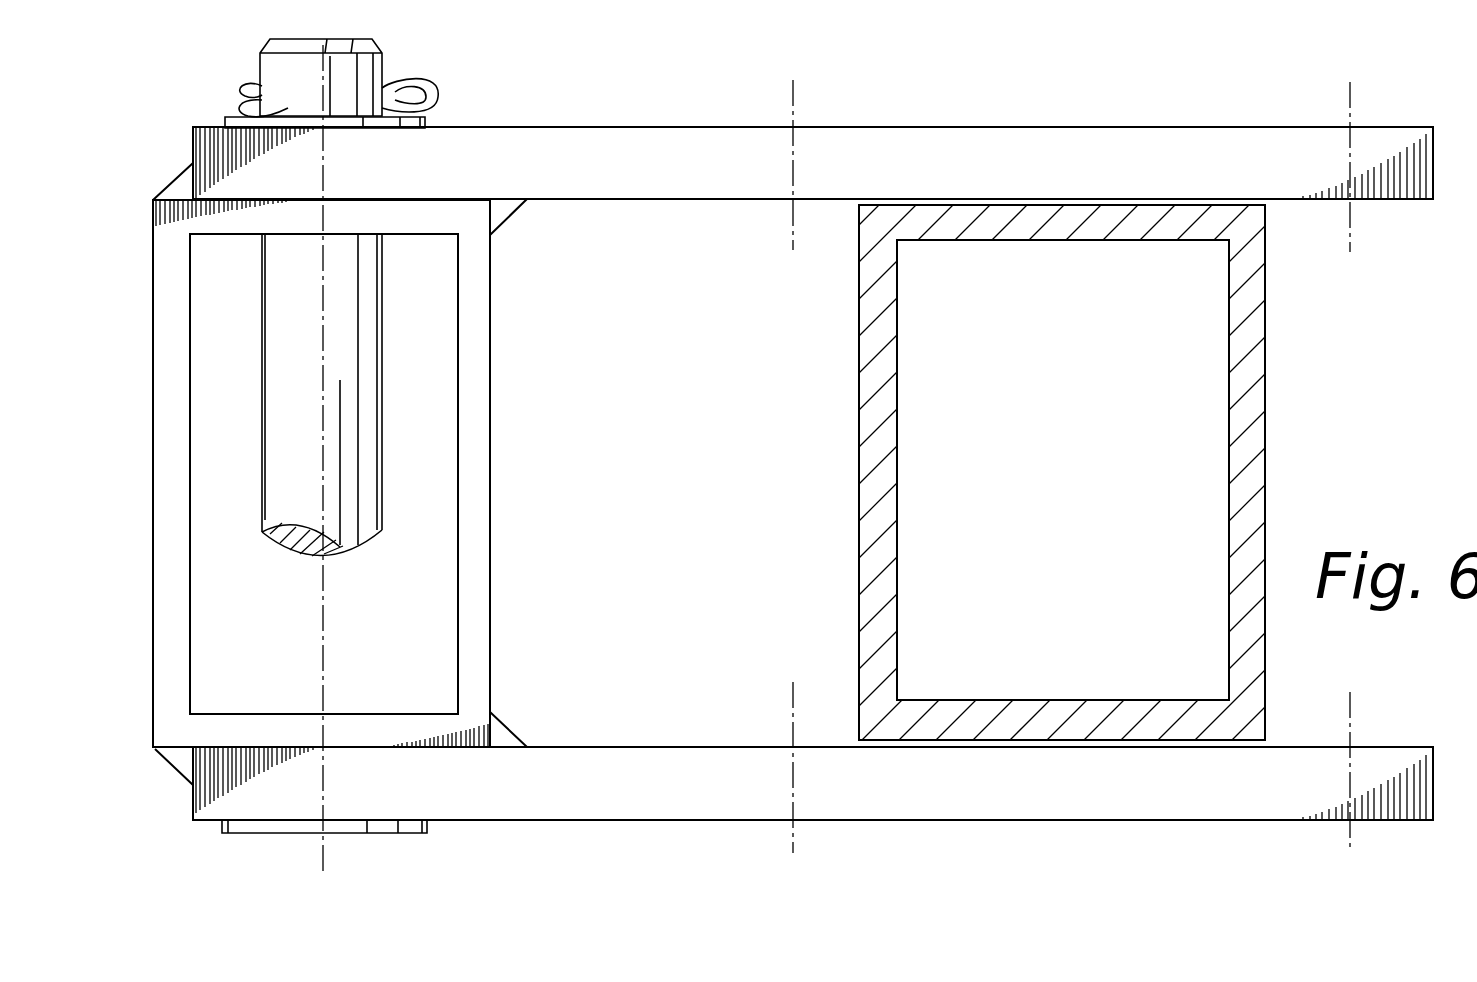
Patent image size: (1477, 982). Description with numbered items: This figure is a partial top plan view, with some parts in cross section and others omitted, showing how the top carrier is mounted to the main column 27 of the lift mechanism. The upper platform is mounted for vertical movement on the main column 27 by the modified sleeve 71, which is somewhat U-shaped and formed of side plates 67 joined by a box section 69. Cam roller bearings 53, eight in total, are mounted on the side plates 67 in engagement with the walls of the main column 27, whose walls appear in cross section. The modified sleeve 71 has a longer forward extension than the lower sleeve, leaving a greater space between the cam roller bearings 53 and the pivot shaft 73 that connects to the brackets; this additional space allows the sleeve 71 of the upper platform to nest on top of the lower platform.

The main column 27 is at (1260, 333).
The cam roller bearings 53 is at (793, 218).
The side plates 67 is at (947, 145).
The box section 69 is at (480, 592).
The modified sleeve 71 is at (727, 147).
The pivot shaft 73 is at (367, 365).